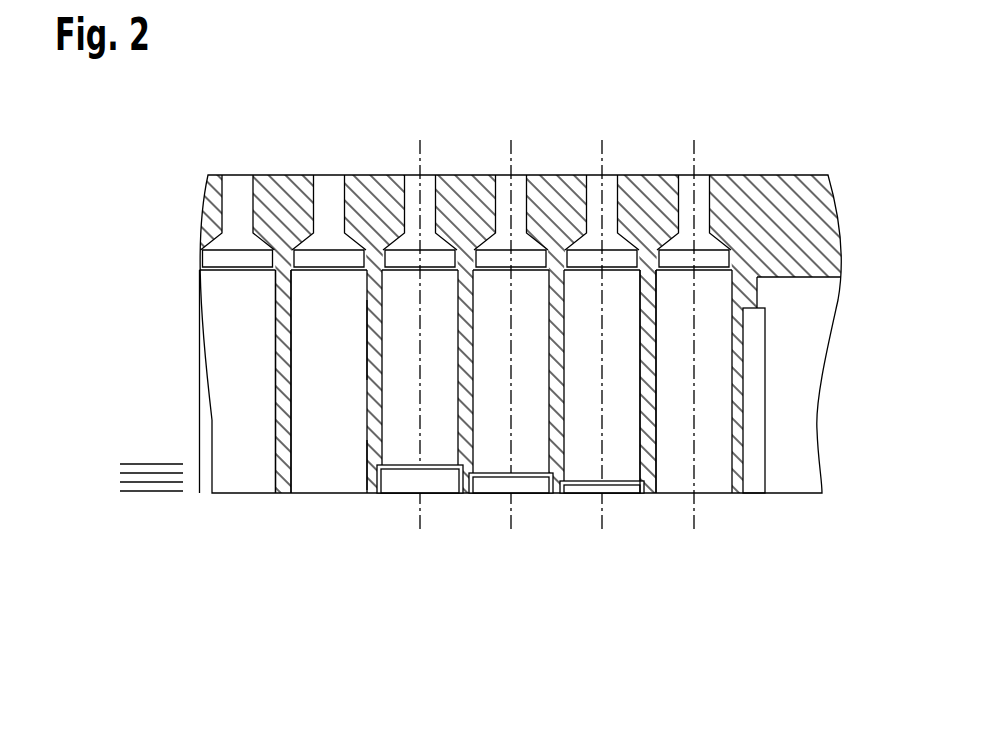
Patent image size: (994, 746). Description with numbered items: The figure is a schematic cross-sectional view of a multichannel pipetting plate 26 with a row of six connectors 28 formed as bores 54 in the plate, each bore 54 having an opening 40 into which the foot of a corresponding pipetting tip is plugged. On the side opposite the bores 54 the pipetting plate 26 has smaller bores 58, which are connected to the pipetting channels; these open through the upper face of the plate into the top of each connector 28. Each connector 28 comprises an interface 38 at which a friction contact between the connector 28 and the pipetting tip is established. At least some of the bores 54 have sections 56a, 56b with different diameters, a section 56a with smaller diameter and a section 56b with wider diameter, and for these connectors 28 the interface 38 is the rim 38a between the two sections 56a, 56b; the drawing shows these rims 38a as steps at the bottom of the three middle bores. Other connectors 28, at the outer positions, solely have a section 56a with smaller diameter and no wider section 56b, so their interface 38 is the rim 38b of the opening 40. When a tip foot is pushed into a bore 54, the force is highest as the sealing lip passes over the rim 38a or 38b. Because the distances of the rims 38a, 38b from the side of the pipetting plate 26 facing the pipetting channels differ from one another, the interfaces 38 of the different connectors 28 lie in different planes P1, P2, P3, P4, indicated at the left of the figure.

The pipetting plate 26 is at (518, 341).
The connector 28 is at (243, 505).
The interface 38 is at (471, 426).
The rim 38a is at (378, 466).
The rim of the opening 38b is at (279, 470).
The opening 40 is at (476, 341).
The bore 54 is at (476, 341).
The section with smaller diameter 56a is at (374, 343).
The section with wider diameter 56b is at (375, 482).
The bore 58 is at (466, 173).
The plane P1 is at (133, 492).
The plane P2 is at (120, 482).
The plane P3 is at (120, 473).
The plane P4 is at (133, 463).